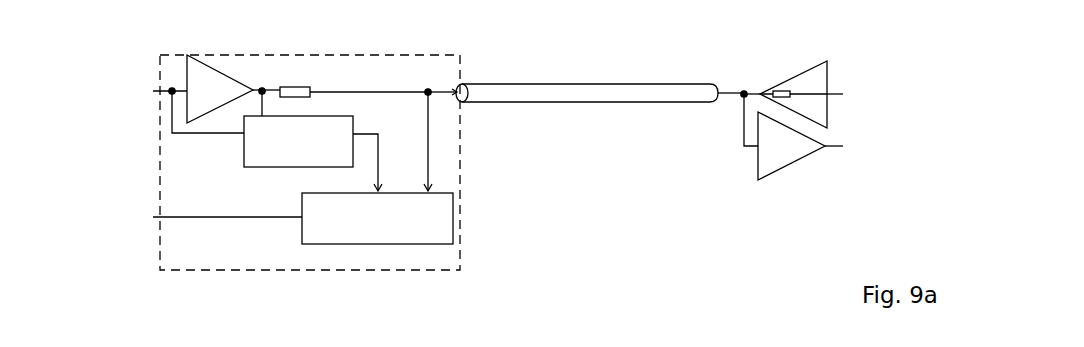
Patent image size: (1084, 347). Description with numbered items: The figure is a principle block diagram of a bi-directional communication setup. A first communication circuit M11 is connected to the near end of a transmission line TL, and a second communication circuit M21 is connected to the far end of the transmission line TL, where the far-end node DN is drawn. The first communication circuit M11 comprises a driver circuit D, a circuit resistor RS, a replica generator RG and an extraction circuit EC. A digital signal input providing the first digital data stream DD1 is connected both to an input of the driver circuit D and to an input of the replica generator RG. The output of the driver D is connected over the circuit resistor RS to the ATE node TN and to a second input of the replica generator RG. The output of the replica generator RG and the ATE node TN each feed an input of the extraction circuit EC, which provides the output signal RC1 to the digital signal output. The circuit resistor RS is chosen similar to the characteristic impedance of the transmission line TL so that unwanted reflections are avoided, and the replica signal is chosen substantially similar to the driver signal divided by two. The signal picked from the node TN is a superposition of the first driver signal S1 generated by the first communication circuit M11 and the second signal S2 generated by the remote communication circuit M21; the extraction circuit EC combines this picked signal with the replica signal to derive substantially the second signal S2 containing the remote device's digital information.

The first digital data stream DD1 is at (128, 91).
The driver circuit D is at (233, 89).
The circuit resistor RS is at (354, 82).
The replica generator RG is at (313, 153).
The extraction circuit EC is at (377, 218).
The output signal RC1 is at (192, 219).
The ATE node TN is at (439, 131).
The first driver signal S1 is at (404, 88).
The second signal S2 is at (507, 77).
The transmission line TL is at (600, 81).
The receive node DN is at (744, 110).
The first communication circuit M11 is at (452, 254).
The second communication circuit M21 is at (818, 224).